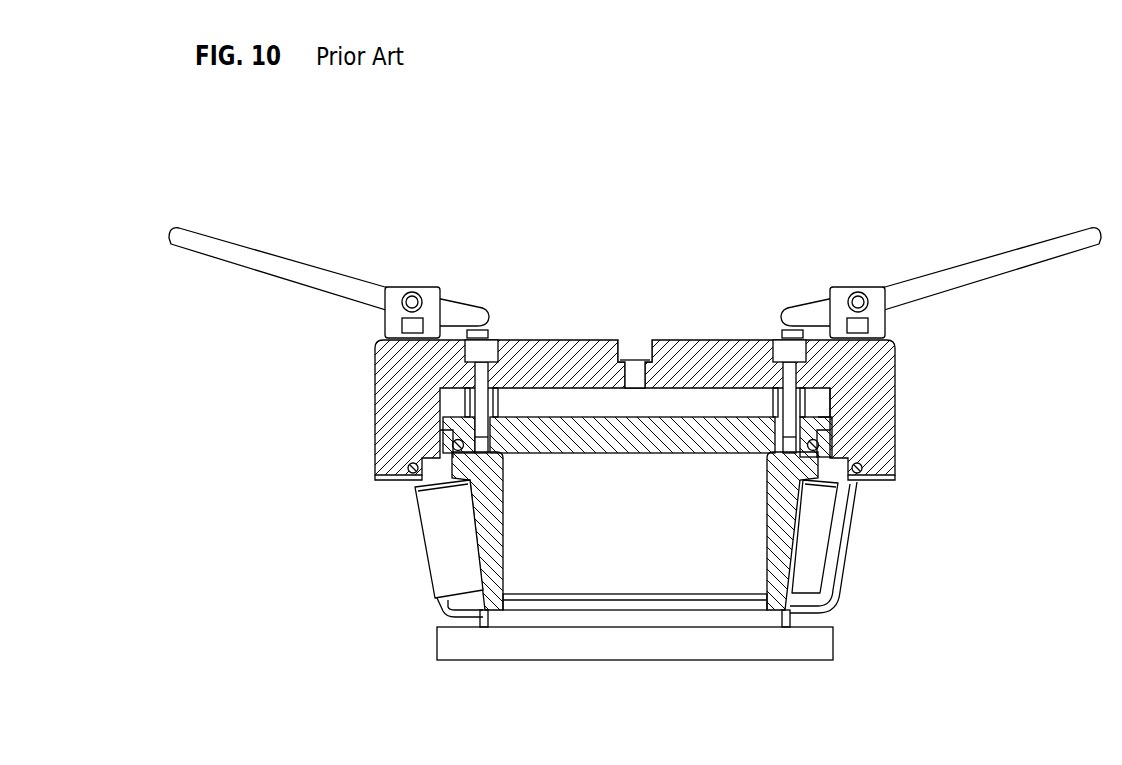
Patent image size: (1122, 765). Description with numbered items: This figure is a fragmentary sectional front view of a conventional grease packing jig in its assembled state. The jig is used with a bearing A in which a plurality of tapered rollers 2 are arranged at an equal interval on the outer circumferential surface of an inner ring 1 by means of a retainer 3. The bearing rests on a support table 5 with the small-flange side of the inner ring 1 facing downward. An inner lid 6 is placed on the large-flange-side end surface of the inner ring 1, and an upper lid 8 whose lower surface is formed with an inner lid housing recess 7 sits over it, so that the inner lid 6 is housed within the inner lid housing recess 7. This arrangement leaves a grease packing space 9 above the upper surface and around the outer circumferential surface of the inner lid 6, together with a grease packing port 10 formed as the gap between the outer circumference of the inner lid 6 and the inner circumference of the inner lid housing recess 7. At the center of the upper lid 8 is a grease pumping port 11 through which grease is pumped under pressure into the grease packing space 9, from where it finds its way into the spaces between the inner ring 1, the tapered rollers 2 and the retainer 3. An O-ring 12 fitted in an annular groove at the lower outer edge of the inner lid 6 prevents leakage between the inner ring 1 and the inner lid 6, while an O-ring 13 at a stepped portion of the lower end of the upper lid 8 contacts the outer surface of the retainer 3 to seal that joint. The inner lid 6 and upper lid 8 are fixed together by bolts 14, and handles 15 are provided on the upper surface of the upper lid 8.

The inner ring 1 is at (777, 612).
The rolling elements (tapered rollers) 2 is at (815, 538).
The retainer 3 is at (830, 576).
The support table 5 is at (627, 647).
The inner lid 6 is at (694, 425).
The inner lid housing recess 7 is at (820, 402).
The upper lid 8 is at (560, 360).
The grease packing space 9 is at (583, 400).
The grease packing port 10 is at (828, 457).
The grease pumping port 11 is at (638, 348).
The O-ring 12 is at (822, 445).
The O-ring 13 is at (860, 479).
The bolts 14 is at (480, 355).
The handles 15 is at (992, 262).
The bearing A is at (853, 523).